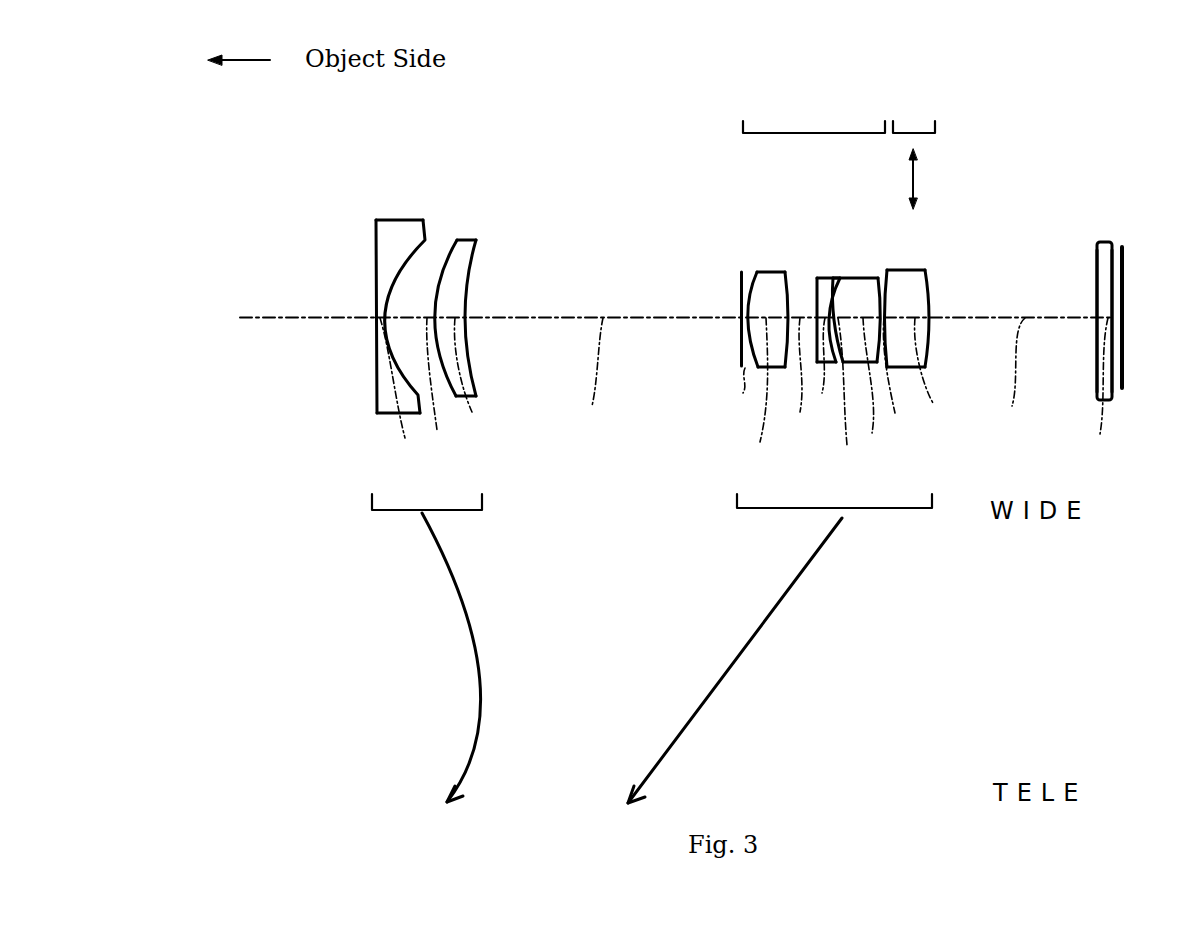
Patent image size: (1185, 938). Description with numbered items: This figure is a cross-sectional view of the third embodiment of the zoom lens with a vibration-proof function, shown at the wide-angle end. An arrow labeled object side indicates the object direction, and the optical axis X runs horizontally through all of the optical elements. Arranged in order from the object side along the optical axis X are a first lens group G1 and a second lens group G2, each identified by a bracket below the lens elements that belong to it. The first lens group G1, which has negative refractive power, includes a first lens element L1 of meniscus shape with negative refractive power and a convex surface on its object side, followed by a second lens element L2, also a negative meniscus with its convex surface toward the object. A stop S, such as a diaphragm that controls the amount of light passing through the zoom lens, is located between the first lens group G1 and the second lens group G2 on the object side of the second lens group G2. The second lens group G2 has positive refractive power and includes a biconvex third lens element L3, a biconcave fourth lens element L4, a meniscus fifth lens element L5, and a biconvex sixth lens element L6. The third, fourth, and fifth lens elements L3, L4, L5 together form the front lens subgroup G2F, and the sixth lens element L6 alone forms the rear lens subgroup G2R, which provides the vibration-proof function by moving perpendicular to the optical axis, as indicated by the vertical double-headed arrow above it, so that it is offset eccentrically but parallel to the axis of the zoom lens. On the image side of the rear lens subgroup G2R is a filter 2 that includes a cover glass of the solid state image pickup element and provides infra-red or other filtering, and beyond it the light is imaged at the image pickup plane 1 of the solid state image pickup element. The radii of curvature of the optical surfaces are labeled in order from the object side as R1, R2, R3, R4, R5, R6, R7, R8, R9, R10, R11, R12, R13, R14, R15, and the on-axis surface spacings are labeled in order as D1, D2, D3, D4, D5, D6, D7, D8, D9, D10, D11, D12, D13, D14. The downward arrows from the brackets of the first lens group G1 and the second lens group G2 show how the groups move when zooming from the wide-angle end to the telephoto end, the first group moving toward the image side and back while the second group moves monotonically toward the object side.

The first lens element L1 is at (395, 221).
The second lens element L2 is at (467, 241).
The third lens element L3 is at (762, 272).
The fourth lens element L4 is at (820, 277).
The fifth lens element L5 is at (858, 277).
The sixth lens element L6 is at (906, 270).
The radius of curvature of first surface R1 is at (376, 315).
The radius of curvature of second surface R2 is at (389, 316).
The radius of curvature of third surface R3 is at (450, 257).
The radius of curvature of fourth surface R4 is at (476, 301).
The radius of curvature of fifth surface R5 is at (741, 306).
The radius of curvature of sixth surface R6 is at (752, 291).
The radius of curvature of seventh surface R7 is at (787, 296).
The radius of curvature of eighth surface R8 is at (817, 300).
The radius of curvature of ninth surface R9 is at (832, 291).
The radius of curvature of tenth surface R10 is at (840, 300).
The radius of curvature of eleventh surface R11 is at (880, 300).
The radius of curvature of twelfth surface R12 is at (890, 277).
The radius of curvature of thirteenth surface R13 is at (931, 306).
The radius of curvature of fourteenth surface R14 is at (1095, 268).
The radius of curvature of fifteenth surface R15 is at (1114, 246).
The on-axis surface spacing D1 is at (397, 394).
The on-axis surface spacing D2 is at (442, 389).
The on-axis surface spacing D3 is at (475, 379).
The on-axis surface spacing D4 is at (587, 376).
The on-axis surface spacing D5 is at (736, 395).
The on-axis surface spacing D6 is at (753, 394).
The on-axis surface spacing D7 is at (792, 378).
The on-axis surface spacing D8 is at (825, 371).
The on-axis surface spacing D9 is at (845, 395).
The on-axis surface spacing D10 is at (883, 388).
The on-axis surface spacing D11 is at (907, 380).
The on-axis surface spacing D12 is at (945, 375).
The on-axis surface spacing D13 is at (1005, 375).
The on-axis surface spacing D14 is at (1092, 390).
The stop S is at (742, 272).
The optical axis X is at (278, 319).
The first lens group G1 is at (427, 525).
The second lens group G2 is at (834, 523).
The first lens subgroup G2F is at (814, 109).
The second lens subgroup G2R is at (915, 109).
The image pickup plane 1 is at (1124, 257).
The filter 2 is at (1105, 241).